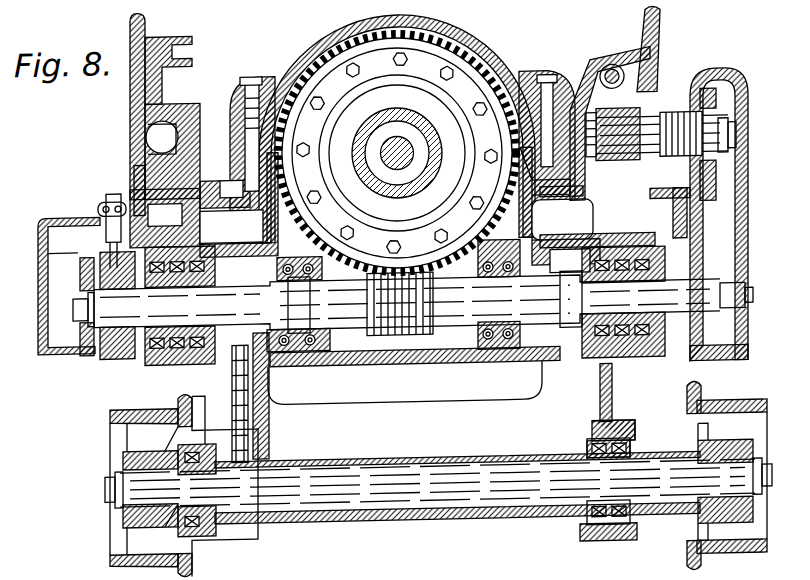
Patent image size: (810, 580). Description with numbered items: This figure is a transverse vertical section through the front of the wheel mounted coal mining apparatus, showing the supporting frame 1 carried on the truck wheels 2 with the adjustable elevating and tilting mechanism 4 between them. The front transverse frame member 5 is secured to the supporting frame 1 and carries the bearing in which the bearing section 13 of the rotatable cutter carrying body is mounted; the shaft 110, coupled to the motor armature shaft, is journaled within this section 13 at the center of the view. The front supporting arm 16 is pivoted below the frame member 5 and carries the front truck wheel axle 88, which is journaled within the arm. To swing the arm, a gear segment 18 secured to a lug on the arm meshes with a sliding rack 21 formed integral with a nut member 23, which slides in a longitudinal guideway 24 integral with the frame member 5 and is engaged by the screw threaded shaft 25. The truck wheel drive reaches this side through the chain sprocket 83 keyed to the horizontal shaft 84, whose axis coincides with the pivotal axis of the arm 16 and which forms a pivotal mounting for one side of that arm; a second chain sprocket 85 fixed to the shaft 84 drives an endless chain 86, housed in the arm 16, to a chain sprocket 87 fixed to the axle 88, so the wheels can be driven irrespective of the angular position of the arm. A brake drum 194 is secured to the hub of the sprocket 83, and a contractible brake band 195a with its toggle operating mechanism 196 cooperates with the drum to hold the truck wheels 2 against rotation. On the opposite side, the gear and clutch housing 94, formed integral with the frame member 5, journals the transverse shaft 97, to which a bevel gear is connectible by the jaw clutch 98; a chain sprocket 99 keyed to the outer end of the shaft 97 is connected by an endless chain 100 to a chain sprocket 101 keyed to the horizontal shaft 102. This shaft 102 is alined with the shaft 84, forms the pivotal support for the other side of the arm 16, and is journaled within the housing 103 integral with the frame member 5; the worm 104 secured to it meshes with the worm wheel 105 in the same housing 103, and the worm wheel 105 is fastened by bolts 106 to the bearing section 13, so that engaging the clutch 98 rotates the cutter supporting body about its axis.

The supporting frame 1 is at (130, 22).
The truck wheels 2 is at (110, 549).
The elevating and tilting mechanism 4 is at (612, 405).
The front transverse frame member 5 is at (216, 181).
The bearing section 13 is at (250, 66).
The front supporting arm 16 is at (380, 521).
The gear segment 18 is at (125, 194).
The sliding rack 21 is at (140, 174).
The nut member 23 is at (146, 122).
The longitudinal guideway 24 is at (170, 115).
The screw threaded shaft 25 is at (150, 124).
The chain sprocket 83 is at (86, 350).
The horizontal shaft 84 is at (165, 361).
The chain sprocket 85 is at (245, 343).
The endless chain 86 is at (248, 415).
The chain sprocket 87 is at (240, 534).
The front truck wheel axle 88 is at (474, 487).
The gear and clutch housing 94 is at (736, 142).
The transverse shaft 97 is at (668, 134).
The jaw clutch 98 is at (648, 104).
The chain sprocket 99 is at (704, 117).
The endless chain 100 is at (722, 188).
The chain sprocket 101 is at (728, 345).
The horizontal shaft 102 is at (640, 305).
The housing 103 is at (400, 365).
The worm 104 is at (420, 331).
The worm wheel 105 is at (472, 62).
The bolts 106 is at (348, 72).
The shaft 110 is at (388, 145).
The brake drum 194 is at (118, 356).
The contractible brake band 195a is at (105, 250).
The toggle operating mechanism 196 is at (100, 198).